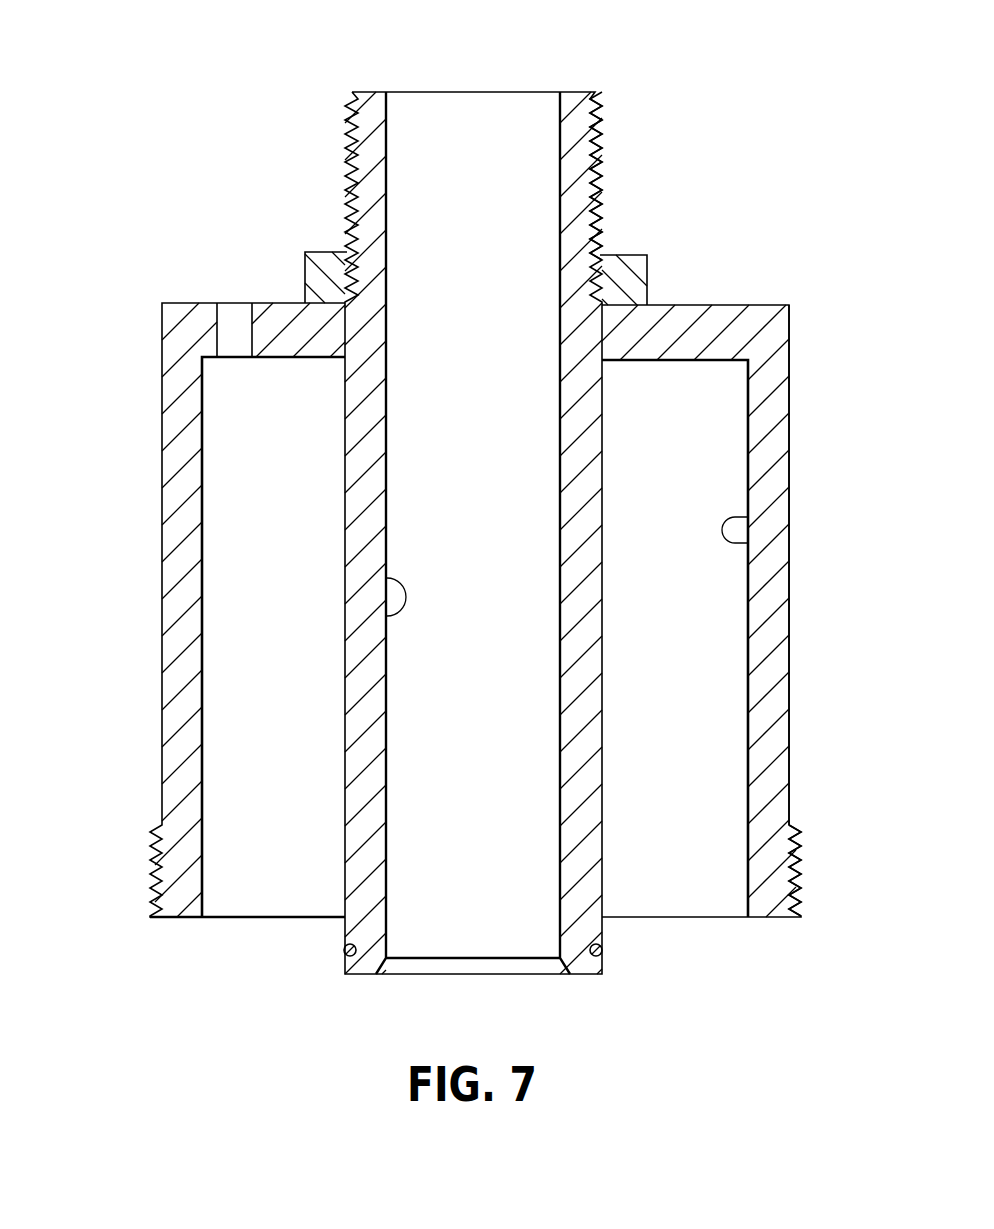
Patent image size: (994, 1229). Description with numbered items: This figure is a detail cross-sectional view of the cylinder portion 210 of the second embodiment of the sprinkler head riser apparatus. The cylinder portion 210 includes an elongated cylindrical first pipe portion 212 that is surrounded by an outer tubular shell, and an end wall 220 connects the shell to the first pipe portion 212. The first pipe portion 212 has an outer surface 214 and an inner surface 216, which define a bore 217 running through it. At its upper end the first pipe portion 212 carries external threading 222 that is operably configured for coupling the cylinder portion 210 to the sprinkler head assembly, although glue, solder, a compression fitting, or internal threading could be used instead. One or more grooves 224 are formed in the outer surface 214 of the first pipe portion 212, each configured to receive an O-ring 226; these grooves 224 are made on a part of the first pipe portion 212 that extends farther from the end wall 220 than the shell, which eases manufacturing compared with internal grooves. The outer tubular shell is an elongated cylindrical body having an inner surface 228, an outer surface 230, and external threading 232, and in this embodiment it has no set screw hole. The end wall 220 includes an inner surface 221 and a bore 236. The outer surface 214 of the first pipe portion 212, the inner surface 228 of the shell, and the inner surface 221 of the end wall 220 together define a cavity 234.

The cylinder portion 210 is at (651, 64).
The first pipe portion 212 is at (368, 483).
The outer surface 214 is at (345, 537).
The inner surface 216 is at (390, 578).
The bore 217 is at (532, 286).
The end wall 220 is at (722, 318).
The inner surface 221 is at (685, 362).
The external threading 222 is at (603, 137).
The grooves 224 is at (343, 938).
The O-ring 226 is at (343, 950).
The inner surface 228 is at (752, 515).
The outer surface 230 is at (790, 580).
The external threading 232 is at (797, 858).
The cavity 234 is at (698, 434).
The bore 236 is at (237, 320).